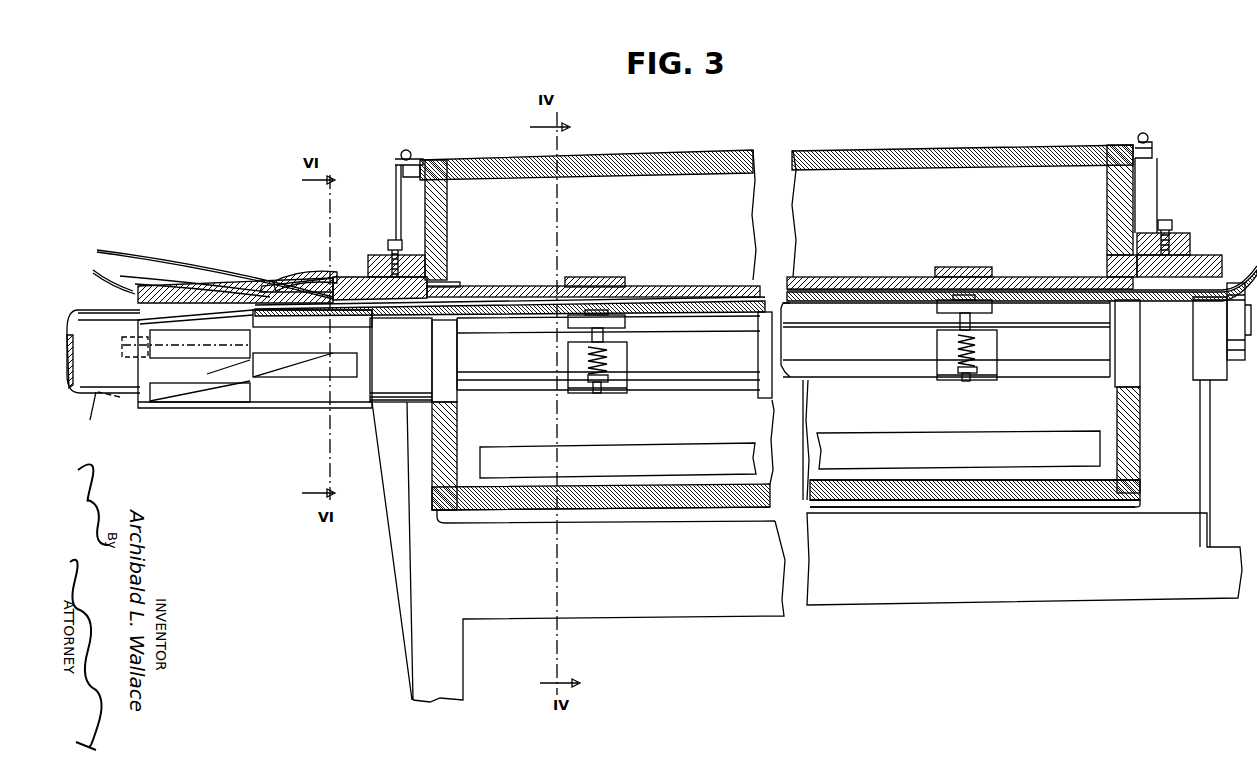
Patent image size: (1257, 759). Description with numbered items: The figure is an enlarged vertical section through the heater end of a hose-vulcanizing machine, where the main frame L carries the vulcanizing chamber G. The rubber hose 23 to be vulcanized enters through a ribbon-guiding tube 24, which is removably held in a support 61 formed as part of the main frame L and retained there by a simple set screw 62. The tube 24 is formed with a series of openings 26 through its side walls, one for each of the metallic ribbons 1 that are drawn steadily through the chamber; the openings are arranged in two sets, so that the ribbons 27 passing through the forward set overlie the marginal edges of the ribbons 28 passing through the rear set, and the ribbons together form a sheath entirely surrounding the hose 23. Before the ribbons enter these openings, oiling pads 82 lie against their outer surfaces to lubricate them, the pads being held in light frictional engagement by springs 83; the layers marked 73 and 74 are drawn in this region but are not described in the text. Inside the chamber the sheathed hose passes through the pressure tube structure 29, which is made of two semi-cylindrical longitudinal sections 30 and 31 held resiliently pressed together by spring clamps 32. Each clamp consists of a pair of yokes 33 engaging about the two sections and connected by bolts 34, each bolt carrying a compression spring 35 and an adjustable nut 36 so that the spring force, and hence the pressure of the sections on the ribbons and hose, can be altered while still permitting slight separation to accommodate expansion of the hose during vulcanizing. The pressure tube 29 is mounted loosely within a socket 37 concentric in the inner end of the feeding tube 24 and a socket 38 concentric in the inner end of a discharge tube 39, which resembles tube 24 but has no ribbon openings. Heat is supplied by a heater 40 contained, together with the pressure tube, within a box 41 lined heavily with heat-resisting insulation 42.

The ribbon 1 is at (93, 270).
The rubber hose 23 is at (90, 316).
The ribbon-guiding tube 24 is at (356, 402).
The openings 26 is at (206, 402).
The ribbons of forward set 27 is at (216, 285).
The ribbons of rear set 28 is at (121, 322).
The pressure tube structure 29 is at (678, 286).
The semi-cylindrical section 30 is at (862, 278).
The semi-cylindrical section 31 is at (862, 378).
The spring clamp 32 is at (628, 393).
The yoke 33 is at (605, 277).
The bolt 34 is at (588, 360).
The compression spring 35 is at (608, 356).
The adjustable nut 36 is at (596, 383).
The socket 37 is at (460, 284).
The socket 38 is at (1108, 266).
The discharge tube 39 is at (1196, 272).
The heater 40 is at (711, 452).
The box 41 is at (888, 507).
The heat resisting insulation 42 is at (1048, 498).
The support 61 is at (390, 415).
The set screw 62 is at (392, 246).
The strip layer 73 is at (127, 277).
The strip layer 74 is at (162, 284).
The oiling pad 82 is at (262, 284).
The spring 83 is at (313, 273).
The vulcanizing chamber G is at (776, 328).
The main frame L is at (827, 541).